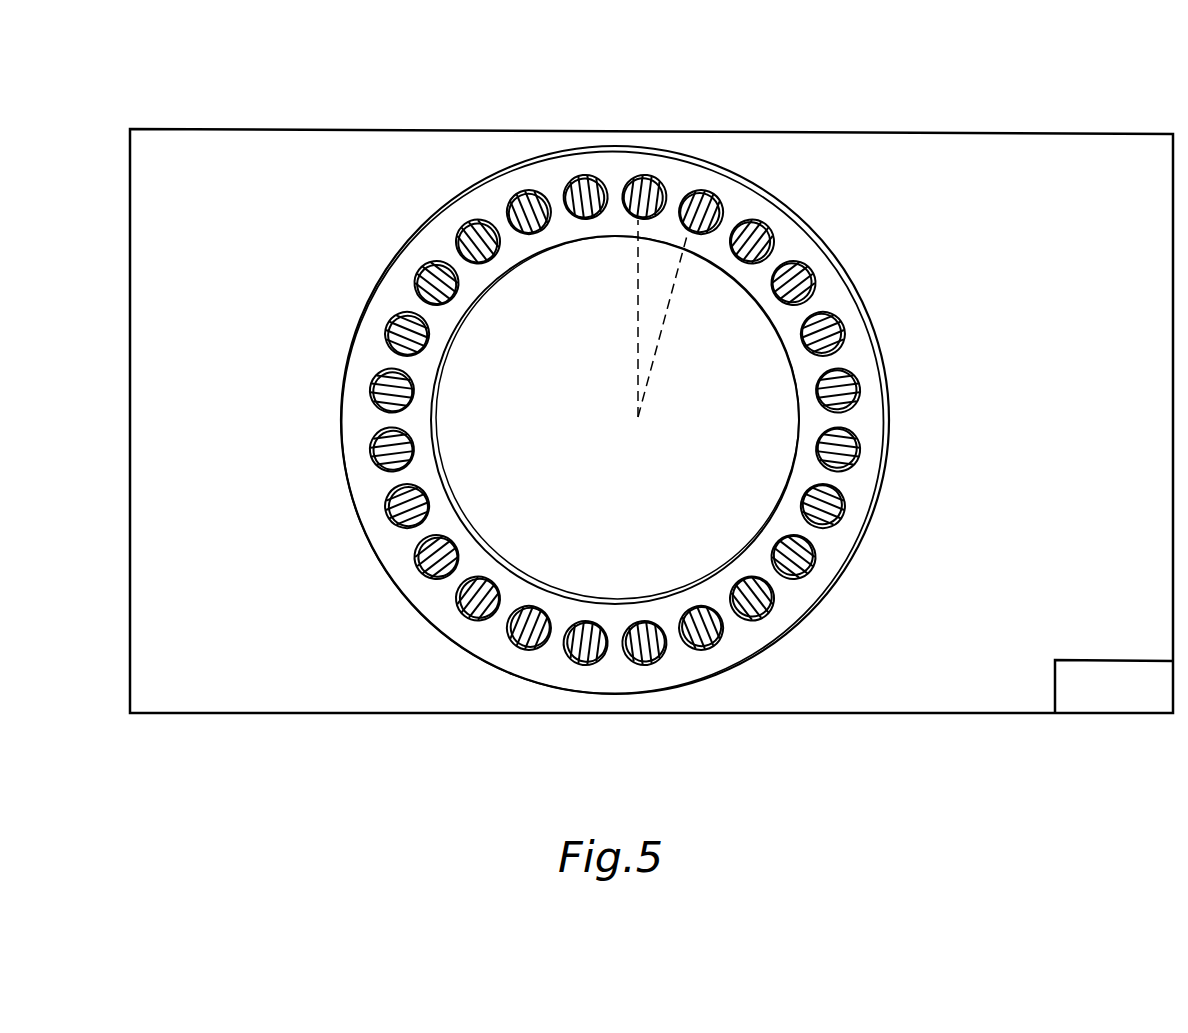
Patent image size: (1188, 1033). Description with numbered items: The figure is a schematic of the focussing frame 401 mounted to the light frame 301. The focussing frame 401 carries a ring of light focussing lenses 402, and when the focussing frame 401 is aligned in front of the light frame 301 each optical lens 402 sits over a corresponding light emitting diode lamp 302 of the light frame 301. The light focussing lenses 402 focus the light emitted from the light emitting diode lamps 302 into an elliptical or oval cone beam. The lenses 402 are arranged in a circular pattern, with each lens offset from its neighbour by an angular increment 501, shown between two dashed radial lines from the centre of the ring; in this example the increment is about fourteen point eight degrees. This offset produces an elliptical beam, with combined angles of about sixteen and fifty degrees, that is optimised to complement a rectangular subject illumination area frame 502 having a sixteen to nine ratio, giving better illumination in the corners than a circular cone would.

The subject illumination area frame 502 is at (345, 129).
The light frame 301 is at (796, 198).
The focussing frame 401 is at (822, 232).
The light emitting diode lamp 302 is at (895, 403).
The light focussing lens 402 is at (855, 383).
The angular increment 501 is at (640, 313).